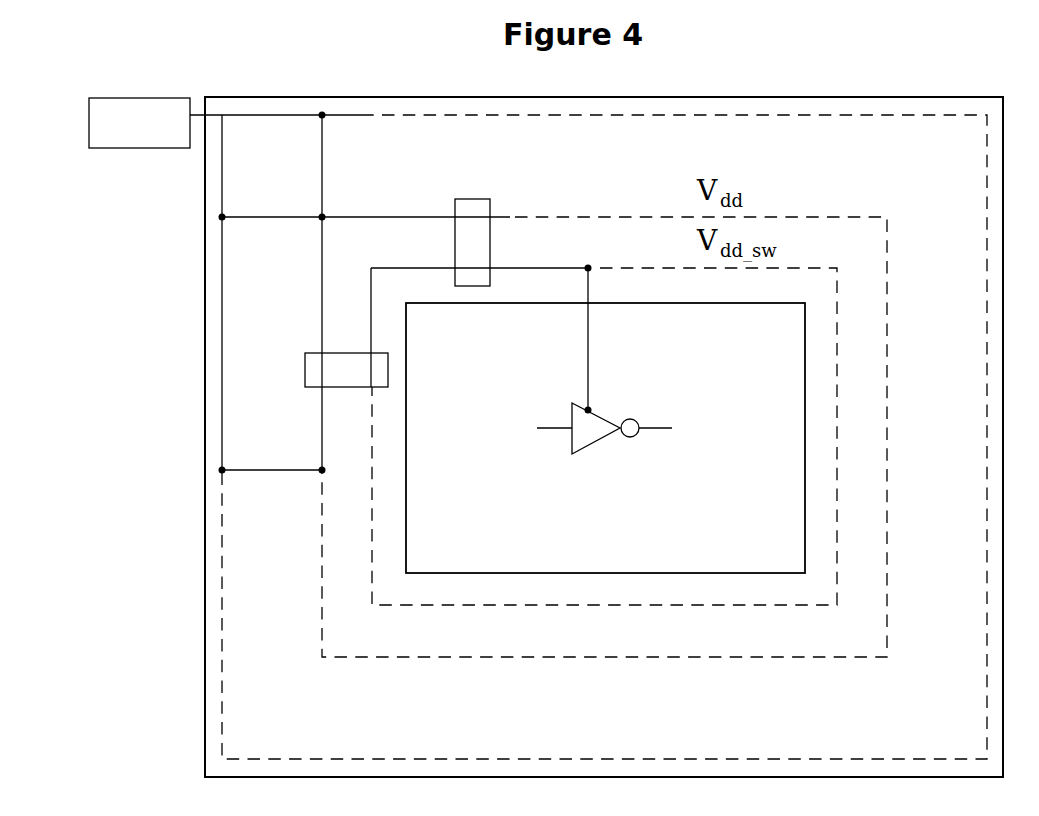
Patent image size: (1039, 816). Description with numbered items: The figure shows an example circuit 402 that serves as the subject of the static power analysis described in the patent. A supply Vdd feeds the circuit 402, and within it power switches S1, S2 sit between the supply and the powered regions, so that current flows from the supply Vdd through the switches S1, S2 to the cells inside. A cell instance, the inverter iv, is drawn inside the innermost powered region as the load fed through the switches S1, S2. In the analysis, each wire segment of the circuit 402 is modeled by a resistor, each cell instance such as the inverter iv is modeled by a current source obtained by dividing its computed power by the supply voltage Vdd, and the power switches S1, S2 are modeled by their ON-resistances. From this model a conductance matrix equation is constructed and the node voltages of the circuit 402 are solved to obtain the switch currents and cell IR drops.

The example circuit 402 is at (168, 323).
The first switch S1 is at (346, 373).
The second switch S2 is at (472, 242).
The inverter iv is at (604, 438).
The supply voltage source Vdd is at (139, 123).